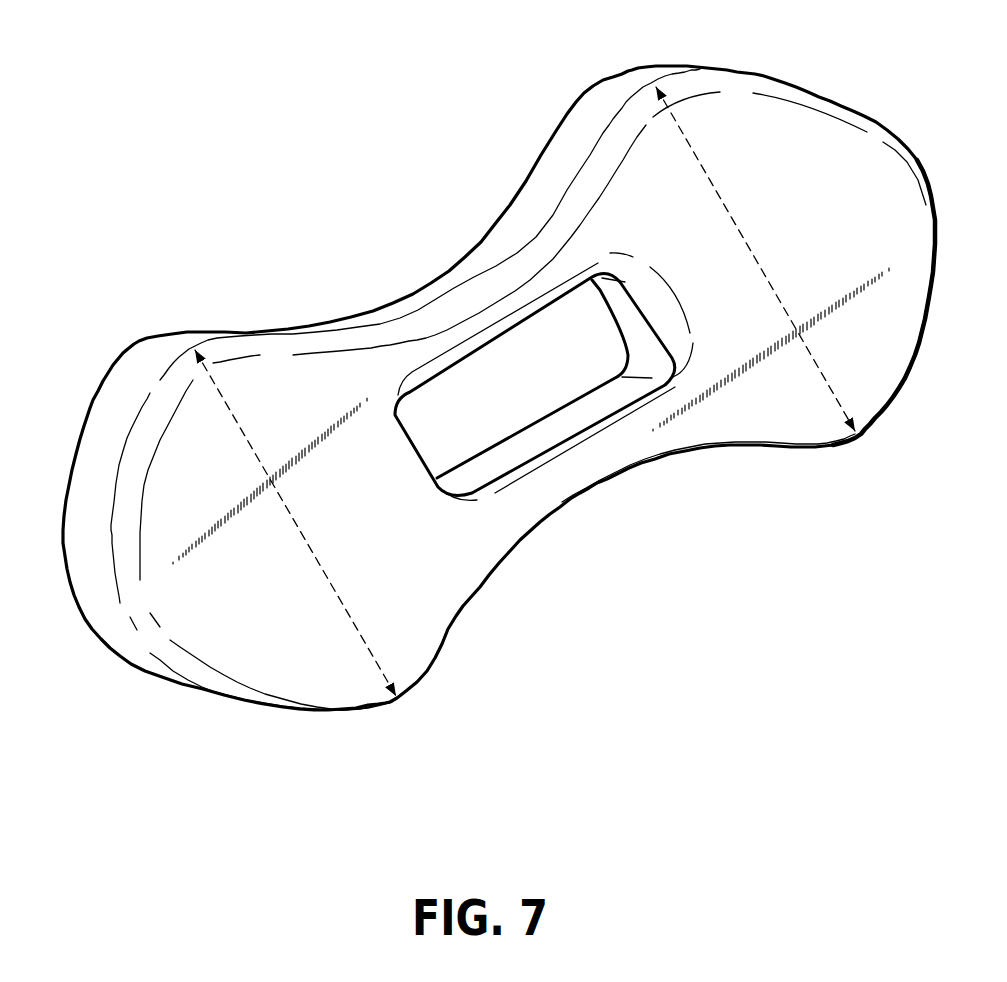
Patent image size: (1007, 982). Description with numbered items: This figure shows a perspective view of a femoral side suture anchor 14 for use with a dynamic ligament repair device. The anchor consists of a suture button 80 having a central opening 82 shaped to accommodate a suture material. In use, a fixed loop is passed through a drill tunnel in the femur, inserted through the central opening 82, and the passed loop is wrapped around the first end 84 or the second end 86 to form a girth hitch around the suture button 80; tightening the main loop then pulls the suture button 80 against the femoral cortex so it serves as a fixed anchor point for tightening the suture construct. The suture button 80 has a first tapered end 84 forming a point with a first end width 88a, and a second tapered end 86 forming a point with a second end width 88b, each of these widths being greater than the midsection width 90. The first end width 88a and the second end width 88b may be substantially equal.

The femoral side suture anchor 14 is at (133, 153).
The suture button 80 is at (410, 182).
The central opening 82 is at (463, 426).
The first tapered end 84 is at (918, 162).
The second tapered end 86 is at (100, 610).
The first end width 88a is at (775, 291).
The second end width 88b is at (317, 560).
The midsection width 90 is at (478, 293).